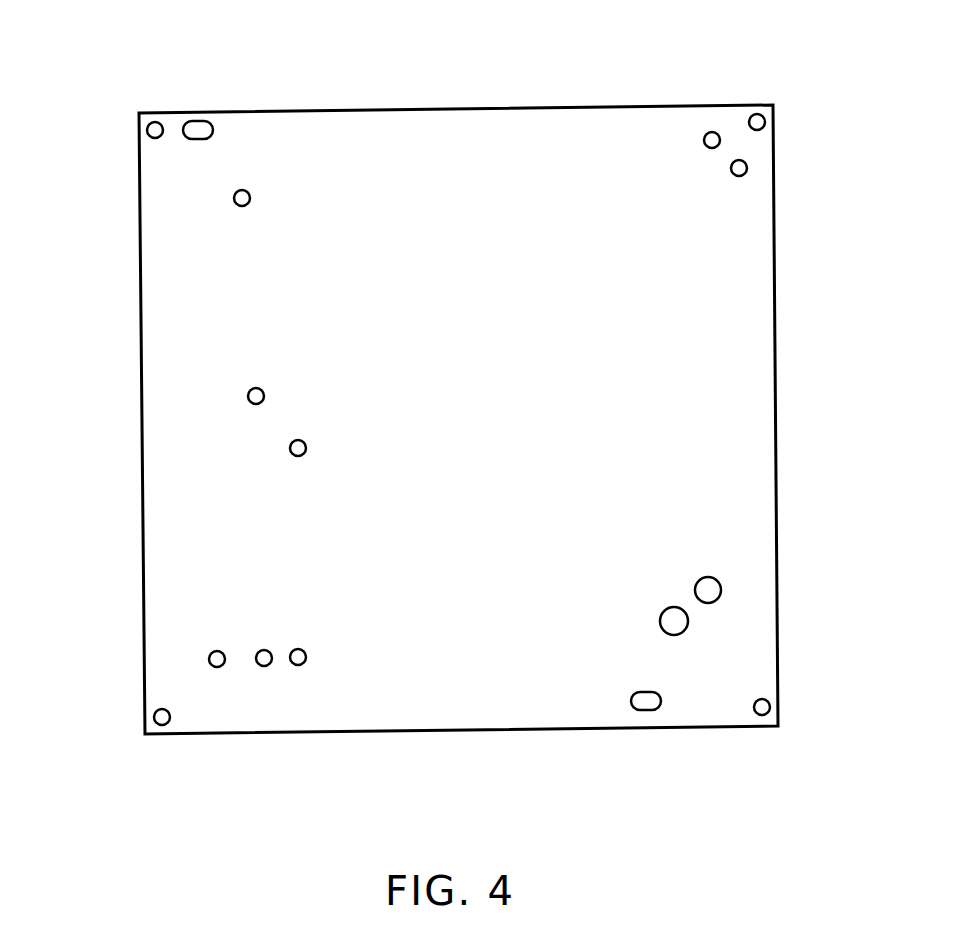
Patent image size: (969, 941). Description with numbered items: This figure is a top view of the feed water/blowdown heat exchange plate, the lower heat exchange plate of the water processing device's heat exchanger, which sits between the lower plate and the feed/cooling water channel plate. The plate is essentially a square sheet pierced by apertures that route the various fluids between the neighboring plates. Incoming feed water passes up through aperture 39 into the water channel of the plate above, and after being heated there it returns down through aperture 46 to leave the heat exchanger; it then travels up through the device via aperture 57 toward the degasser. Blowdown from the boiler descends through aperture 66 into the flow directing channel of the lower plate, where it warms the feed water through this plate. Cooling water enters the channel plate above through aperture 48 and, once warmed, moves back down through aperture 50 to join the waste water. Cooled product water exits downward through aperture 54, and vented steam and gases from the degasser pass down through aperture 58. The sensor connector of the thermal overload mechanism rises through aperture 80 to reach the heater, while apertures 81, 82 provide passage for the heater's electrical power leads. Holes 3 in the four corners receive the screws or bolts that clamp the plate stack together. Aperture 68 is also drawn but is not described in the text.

The holes for screws or bolts 3 is at (155, 122).
The aperture for electrical power leads 81 is at (198, 125).
The aperture for heated feed water outlet 46 is at (248, 193).
The aperture for heated feed water 57 is at (708, 133).
The aperture for vented steam and gases 58 is at (746, 174).
The feed water inlet aperture 39 is at (249, 399).
The cooling water outlet aperture 50 is at (291, 452).
The blowdown aperture 66 is at (217, 667).
The product water outlet aperture 54 is at (265, 666).
The cooling water inlet aperture 48 is at (305, 663).
The thermal overload sensor aperture 80 is at (718, 596).
The large hole 68 is at (678, 632).
The aperture for electrical power leads 82 is at (646, 710).